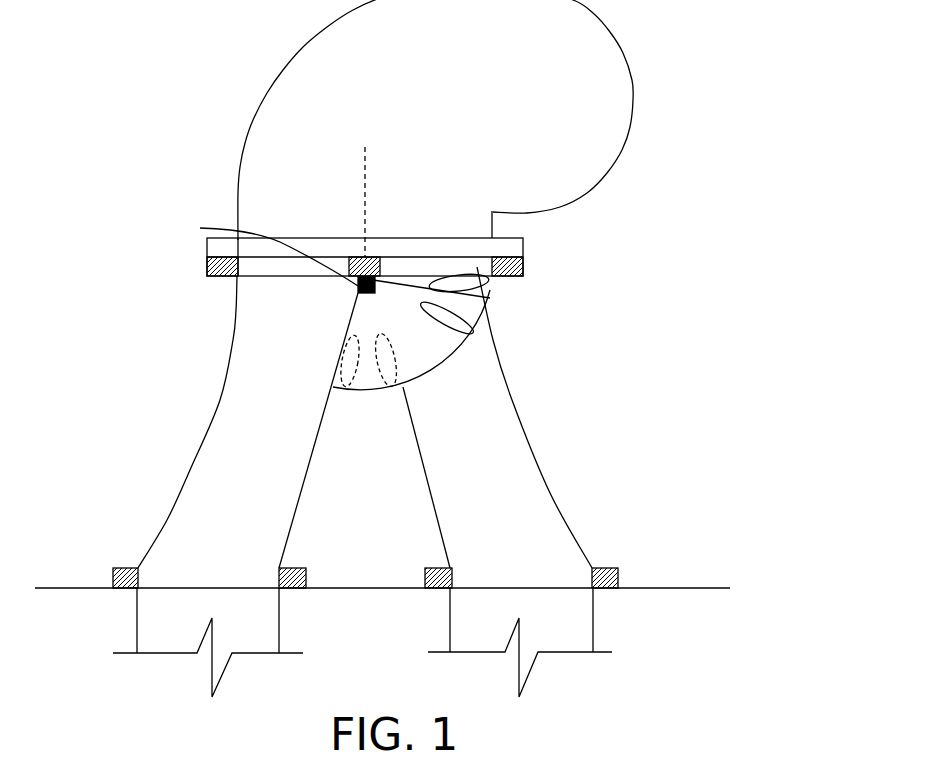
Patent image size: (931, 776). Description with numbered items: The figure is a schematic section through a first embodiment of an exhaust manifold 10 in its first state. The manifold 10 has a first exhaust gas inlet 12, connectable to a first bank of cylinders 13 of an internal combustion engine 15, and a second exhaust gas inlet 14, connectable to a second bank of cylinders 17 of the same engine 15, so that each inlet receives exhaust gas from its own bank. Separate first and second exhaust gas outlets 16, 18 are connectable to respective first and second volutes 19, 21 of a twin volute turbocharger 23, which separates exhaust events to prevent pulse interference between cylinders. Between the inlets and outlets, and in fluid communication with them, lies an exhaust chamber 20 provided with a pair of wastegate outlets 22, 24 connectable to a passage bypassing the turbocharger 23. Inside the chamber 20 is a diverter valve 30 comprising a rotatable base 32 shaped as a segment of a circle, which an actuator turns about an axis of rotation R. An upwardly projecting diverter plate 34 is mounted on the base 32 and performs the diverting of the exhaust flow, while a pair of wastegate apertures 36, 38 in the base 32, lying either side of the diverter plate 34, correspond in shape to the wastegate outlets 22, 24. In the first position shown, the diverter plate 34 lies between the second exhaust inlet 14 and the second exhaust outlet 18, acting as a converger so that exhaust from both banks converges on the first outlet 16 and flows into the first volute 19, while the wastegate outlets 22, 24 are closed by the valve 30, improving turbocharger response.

The manifold 10 is at (623, 247).
The first exhaust gas inlet 12 is at (198, 512).
The first bank of cylinders 13 is at (175, 633).
The second exhaust gas inlet 14 is at (537, 555).
The internal combustion engine 15 is at (68, 588).
The first exhaust gas outlet 16 is at (275, 268).
The second bank of cylinders 17 is at (550, 635).
The second exhaust gas outlet 18 is at (488, 283).
The first volute 19 is at (275, 193).
The exhaust chamber 20 is at (285, 338).
The second volute 21 is at (478, 222).
The wastegate outlet 22 is at (335, 387).
The twin volute turbocharger 23 is at (595, 118).
The wastegate outlet 24 is at (380, 378).
The diverter valve 30 is at (362, 462).
The base 32 is at (355, 380).
The diverter plate 34 is at (450, 295).
The wastegate aperture 36 is at (420, 303).
The wastegate aperture 38 is at (478, 298).
The axis of rotation R is at (331, 252).